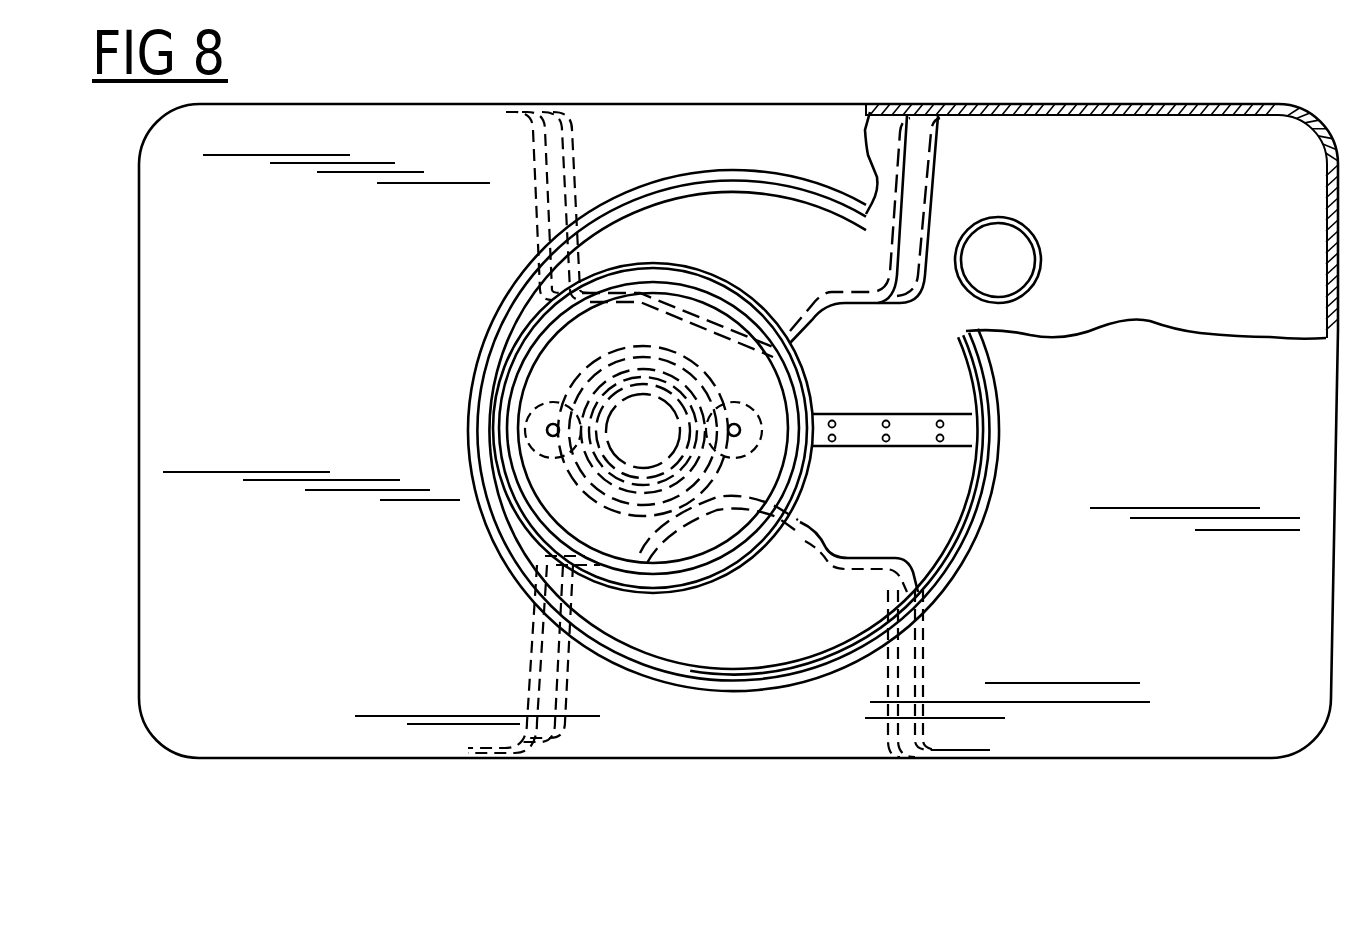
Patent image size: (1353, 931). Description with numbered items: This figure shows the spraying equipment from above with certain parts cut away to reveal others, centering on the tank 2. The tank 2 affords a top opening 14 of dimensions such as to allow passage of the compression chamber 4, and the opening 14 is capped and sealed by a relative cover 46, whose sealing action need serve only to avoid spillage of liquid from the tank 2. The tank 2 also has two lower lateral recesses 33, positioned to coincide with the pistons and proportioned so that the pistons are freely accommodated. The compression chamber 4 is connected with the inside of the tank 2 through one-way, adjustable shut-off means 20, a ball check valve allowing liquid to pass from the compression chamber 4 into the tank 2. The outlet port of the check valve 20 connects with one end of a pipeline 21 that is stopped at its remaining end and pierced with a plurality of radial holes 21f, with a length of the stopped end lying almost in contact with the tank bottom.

The tank 2 is at (191, 758).
The compression chamber 4 is at (772, 305).
The top opening 14 is at (965, 512).
The one-way adjustable shut-off means 20 is at (735, 404).
The pipeline 21 is at (962, 437).
The radial holes 21f is at (944, 421).
The lower lateral recesses 33 is at (570, 167).
The cover 46 is at (708, 696).